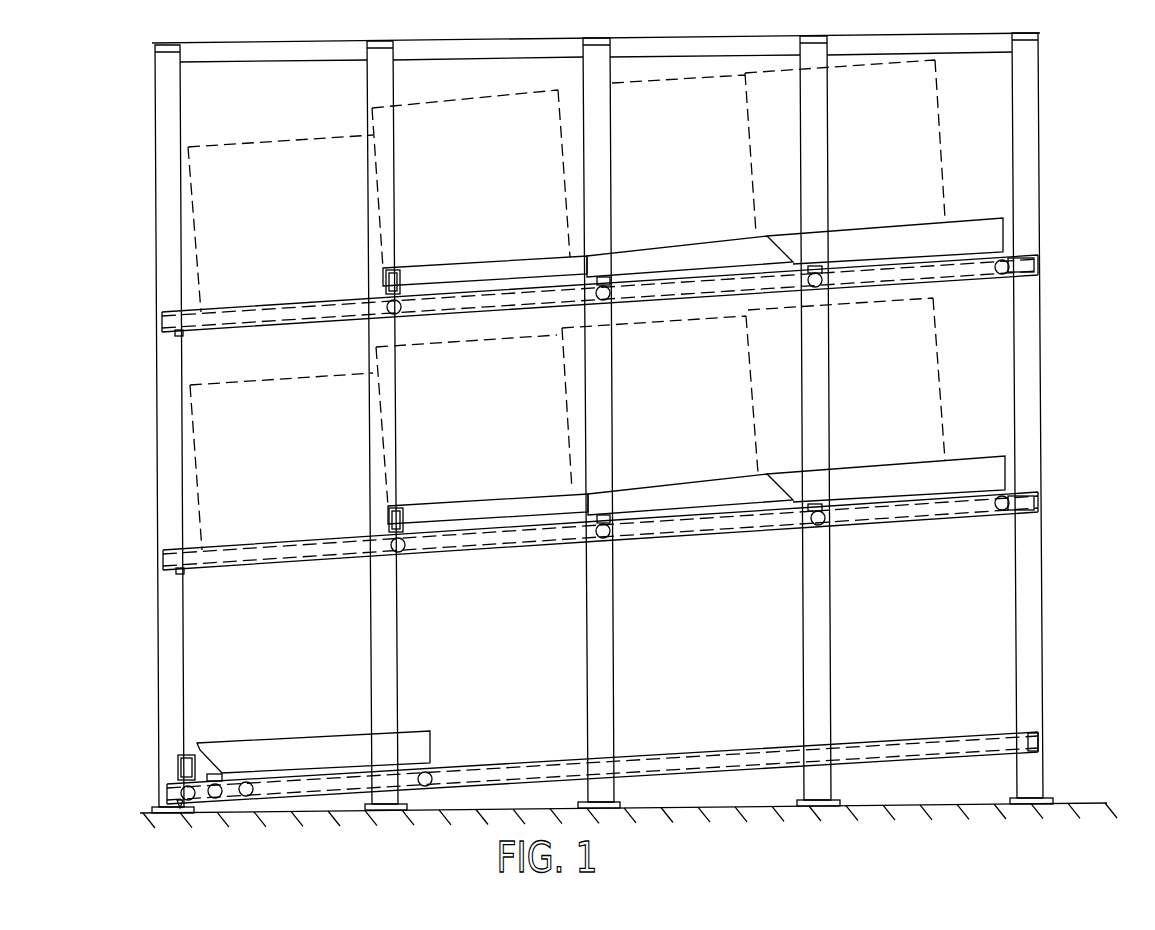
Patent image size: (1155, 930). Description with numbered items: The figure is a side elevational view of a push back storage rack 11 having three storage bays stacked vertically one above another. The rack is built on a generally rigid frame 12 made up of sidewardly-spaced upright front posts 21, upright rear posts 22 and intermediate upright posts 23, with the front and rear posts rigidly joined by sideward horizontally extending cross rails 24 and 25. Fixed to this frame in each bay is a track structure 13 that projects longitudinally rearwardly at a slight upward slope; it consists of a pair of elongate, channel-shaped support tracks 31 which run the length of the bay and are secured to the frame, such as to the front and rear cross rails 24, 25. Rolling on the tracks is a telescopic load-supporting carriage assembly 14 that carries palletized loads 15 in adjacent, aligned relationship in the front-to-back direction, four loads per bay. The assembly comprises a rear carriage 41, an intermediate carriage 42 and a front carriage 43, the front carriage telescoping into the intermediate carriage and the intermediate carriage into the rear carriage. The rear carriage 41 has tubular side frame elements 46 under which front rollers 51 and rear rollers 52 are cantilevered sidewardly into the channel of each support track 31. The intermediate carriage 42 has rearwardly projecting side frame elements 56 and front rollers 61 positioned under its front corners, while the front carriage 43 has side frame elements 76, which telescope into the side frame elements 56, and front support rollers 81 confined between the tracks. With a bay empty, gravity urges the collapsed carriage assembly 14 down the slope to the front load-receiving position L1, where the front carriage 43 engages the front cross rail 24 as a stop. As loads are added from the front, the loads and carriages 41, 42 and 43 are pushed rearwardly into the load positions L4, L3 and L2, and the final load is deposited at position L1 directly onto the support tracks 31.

The push back storage rack 11 is at (1072, 284).
The frame 12 is at (1048, 571).
The track structure 13 is at (889, 737).
The carriage assembly 14 is at (826, 464).
The load 15 is at (228, 385).
The front post 21 is at (158, 618).
The rear post 22 is at (1045, 660).
The intermediate upright post 23 is at (833, 614).
The front cross rail 24 is at (165, 793).
The rear cross rail 25 is at (1040, 741).
The support track 31 is at (270, 312).
The rear carriage 41 is at (926, 500).
The intermediate carriage 42 is at (737, 503).
The front carriage 43 is at (527, 520).
The side frame element 46 is at (890, 472).
The front roller 51 is at (826, 519).
The rear roller 52 is at (1000, 509).
The side frame element 56 is at (665, 492).
The front roller 61 is at (600, 536).
The side frame element 76 is at (456, 506).
The front support roller 81 is at (380, 550).
The front load-receiving position L1 is at (245, 70).
The load position L2 is at (458, 68).
The load position L3 is at (661, 62).
The load position L4 is at (868, 58).